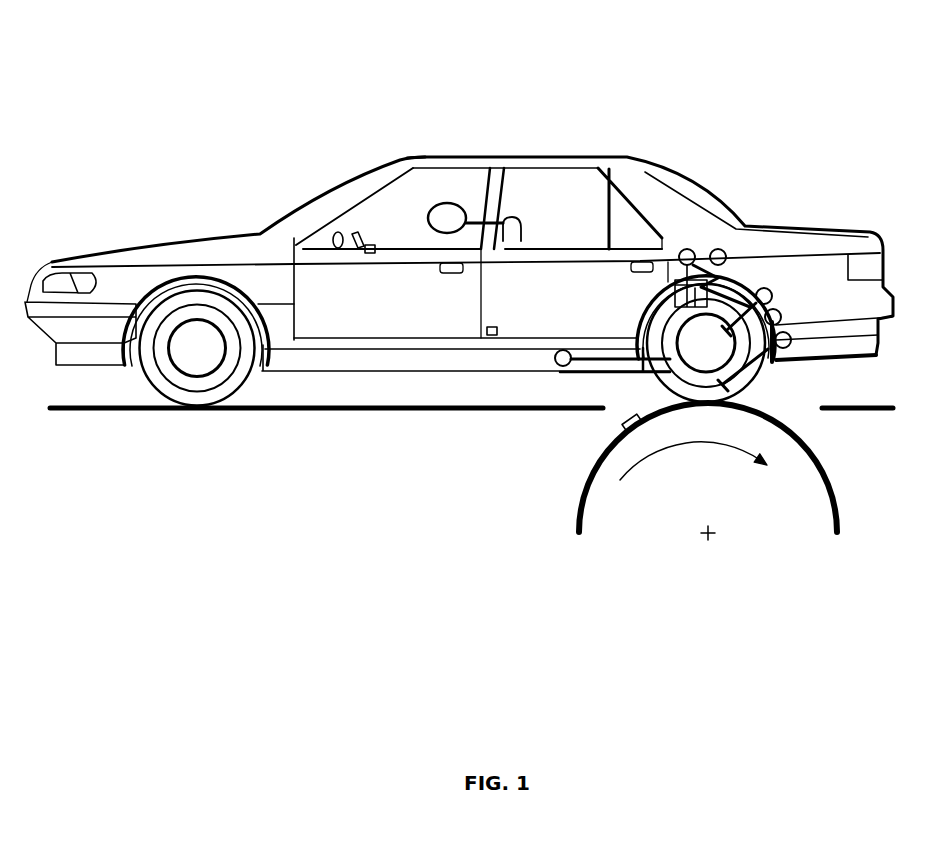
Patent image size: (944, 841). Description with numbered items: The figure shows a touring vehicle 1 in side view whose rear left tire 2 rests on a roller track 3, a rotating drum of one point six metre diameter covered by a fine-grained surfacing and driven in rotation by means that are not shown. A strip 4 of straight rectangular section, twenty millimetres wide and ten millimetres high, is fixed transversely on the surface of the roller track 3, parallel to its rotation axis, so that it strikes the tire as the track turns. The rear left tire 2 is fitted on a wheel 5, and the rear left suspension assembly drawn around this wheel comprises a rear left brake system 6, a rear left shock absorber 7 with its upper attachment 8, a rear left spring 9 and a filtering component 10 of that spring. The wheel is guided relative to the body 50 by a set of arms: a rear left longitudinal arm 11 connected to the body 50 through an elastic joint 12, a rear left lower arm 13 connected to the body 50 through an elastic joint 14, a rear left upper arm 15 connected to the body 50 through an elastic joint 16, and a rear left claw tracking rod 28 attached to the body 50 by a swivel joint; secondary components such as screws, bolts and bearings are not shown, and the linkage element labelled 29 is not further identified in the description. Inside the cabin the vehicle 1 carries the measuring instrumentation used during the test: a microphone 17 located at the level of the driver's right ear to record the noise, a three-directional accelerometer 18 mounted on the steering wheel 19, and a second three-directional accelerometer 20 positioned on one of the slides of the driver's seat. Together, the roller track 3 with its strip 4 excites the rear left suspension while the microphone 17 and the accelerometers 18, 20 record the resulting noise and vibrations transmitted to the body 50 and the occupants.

The touring vehicle 1 is at (137, 247).
The rear left tire 2 is at (750, 392).
The roller track 3 is at (782, 485).
The strip 4 is at (622, 430).
The wheel 5 is at (692, 363).
The rear left brake system 6 is at (700, 362).
The rear left shock absorber 7 is at (676, 288).
The upper attachment 8 is at (680, 248).
The rear left spring 9 is at (703, 287).
The filtering component 10 is at (720, 249).
The rear left longitudinal arm 11 is at (603, 360).
The elastic joint 12 is at (553, 365).
The rear left lower arm 13 is at (757, 363).
The elastic joint 14 is at (791, 344).
The rear left upper arm 15 is at (756, 290).
The elastic joint 16 is at (768, 308).
The microphone 17 is at (447, 212).
The three-directional accelerometer 18 is at (368, 254).
The steering wheel 19 is at (357, 243).
The three-directional accelerometer 20 is at (490, 337).
The rear left claw tracking rod 28 is at (778, 322).
The lever 29 is at (783, 324).
The body 50 is at (406, 157).